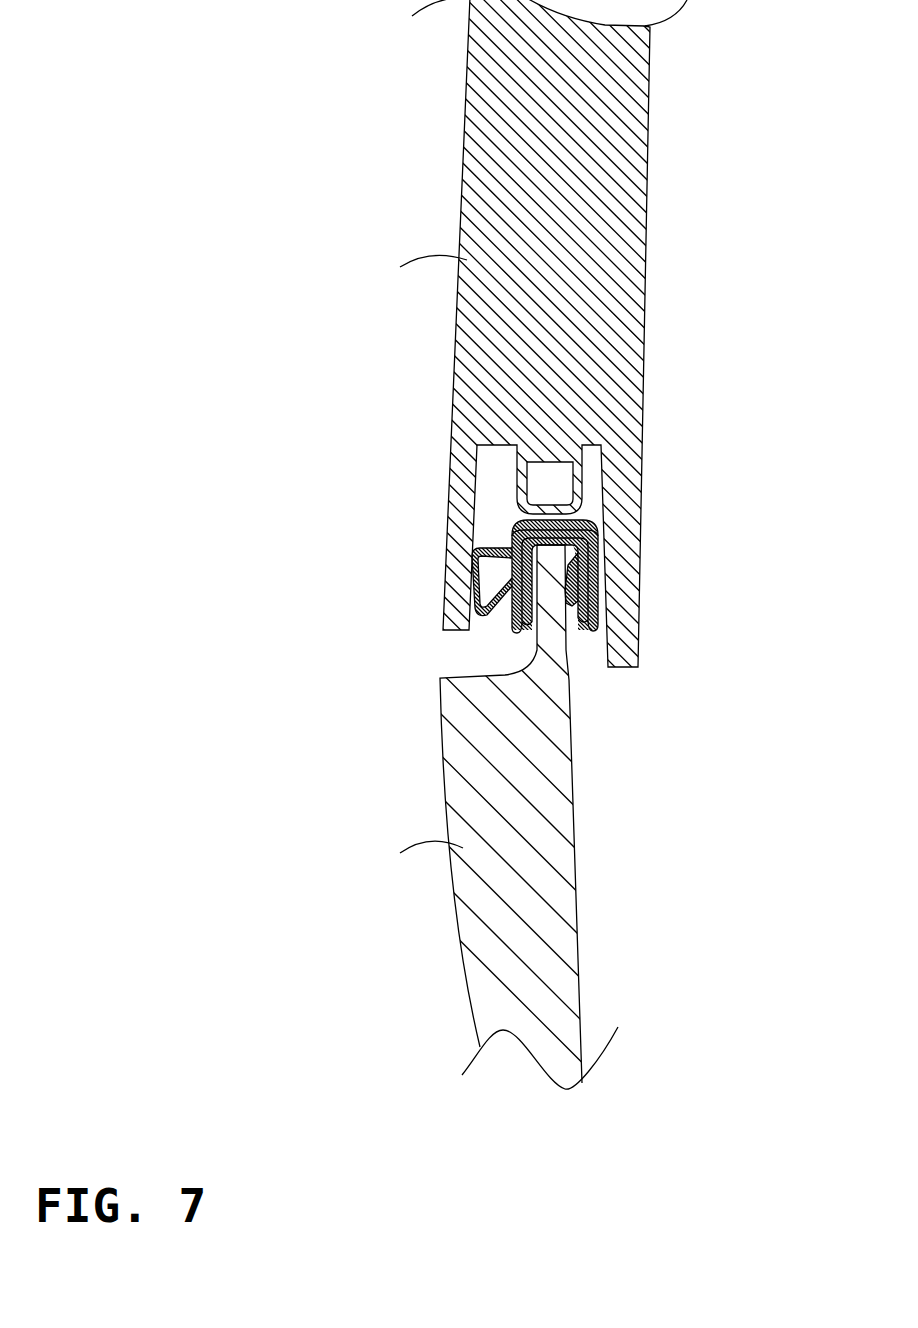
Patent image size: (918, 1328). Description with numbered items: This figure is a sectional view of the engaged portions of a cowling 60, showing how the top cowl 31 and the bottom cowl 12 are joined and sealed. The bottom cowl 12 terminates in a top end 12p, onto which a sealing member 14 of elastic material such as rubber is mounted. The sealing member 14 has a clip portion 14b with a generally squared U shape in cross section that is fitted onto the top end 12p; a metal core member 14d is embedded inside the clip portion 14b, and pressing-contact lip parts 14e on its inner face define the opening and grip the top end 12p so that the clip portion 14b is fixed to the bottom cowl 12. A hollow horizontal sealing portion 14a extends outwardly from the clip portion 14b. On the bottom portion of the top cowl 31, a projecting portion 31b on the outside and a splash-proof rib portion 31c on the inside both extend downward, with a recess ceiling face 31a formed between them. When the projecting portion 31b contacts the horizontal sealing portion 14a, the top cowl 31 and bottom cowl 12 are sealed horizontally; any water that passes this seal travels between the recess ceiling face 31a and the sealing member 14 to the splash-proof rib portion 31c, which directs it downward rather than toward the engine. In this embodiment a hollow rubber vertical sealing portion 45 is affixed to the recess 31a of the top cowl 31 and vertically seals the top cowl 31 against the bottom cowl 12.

The cowling 60 is at (376, 142).
The top cowl 31 is at (470, 264).
The recess ceiling face 31a is at (585, 440).
The projecting portion 31b is at (455, 607).
The splash-proof rib portion 31c is at (617, 575).
The vertical sealing portion 45 is at (584, 516).
The sealing member 14 is at (541, 563).
The horizontal sealing portion 14a is at (474, 553).
The clip portion 14b is at (579, 608).
The metal core member 14d is at (510, 536).
The pressing-contact lip parts 14e is at (598, 560).
The bottom cowl 12 is at (468, 845).
The top end of the bottom cowl 12p is at (556, 600).